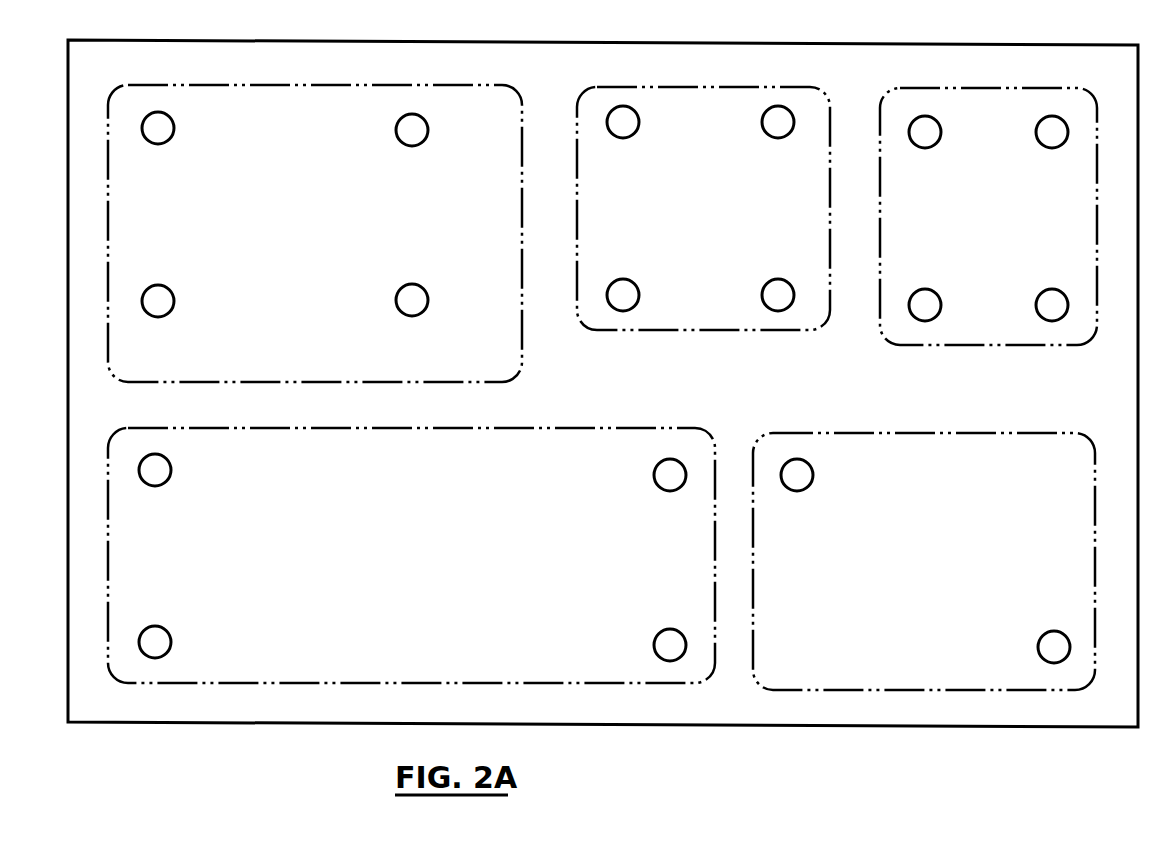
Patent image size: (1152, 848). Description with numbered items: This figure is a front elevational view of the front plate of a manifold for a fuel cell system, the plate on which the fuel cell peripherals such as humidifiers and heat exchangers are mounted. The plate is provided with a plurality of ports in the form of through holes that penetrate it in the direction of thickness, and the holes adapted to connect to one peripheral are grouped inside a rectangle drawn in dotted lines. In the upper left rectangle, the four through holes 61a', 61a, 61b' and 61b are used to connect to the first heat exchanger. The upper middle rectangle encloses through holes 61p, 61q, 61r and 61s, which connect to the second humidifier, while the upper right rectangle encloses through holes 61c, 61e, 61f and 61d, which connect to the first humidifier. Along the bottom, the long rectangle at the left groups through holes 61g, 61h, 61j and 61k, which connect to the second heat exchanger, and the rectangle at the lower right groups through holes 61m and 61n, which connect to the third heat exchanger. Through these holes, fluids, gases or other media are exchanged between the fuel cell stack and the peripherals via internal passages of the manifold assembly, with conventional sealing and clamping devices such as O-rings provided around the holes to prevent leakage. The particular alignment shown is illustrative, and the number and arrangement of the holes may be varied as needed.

The through hole 61a' is at (160, 145).
The through hole 61a is at (414, 148).
The through hole 61b' is at (160, 285).
The through hole 61b is at (414, 284).
The through hole 61p is at (627, 140).
The through hole 61q is at (777, 140).
The through hole 61r is at (625, 282).
The through hole 61s is at (779, 282).
The through hole 61c is at (928, 149).
The through hole 61e is at (1049, 149).
The through hole 61f is at (934, 290).
The through hole 61d is at (1050, 290).
The through hole 61g is at (155, 488).
The through hole 61h is at (155, 628).
The through hole 61j is at (674, 492).
The through hole 61k is at (670, 631).
The through hole 61m is at (800, 494).
The through hole 61n is at (1052, 634).